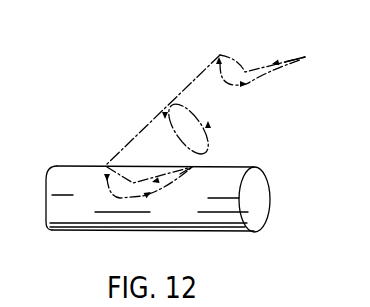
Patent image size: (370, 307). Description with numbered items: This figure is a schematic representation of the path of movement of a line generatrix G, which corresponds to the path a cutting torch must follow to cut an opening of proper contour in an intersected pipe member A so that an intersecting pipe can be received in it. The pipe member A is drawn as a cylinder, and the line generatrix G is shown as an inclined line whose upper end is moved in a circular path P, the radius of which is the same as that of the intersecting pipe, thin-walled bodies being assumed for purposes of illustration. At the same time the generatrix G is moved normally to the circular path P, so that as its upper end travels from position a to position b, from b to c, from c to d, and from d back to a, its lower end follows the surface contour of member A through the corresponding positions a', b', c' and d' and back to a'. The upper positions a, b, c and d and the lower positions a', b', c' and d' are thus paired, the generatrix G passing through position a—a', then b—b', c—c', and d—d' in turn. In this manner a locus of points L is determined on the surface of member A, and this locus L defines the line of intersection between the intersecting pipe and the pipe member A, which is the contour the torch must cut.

The pipe member A is at (55, 207).
The locus of points L is at (143, 194).
The line generatrix G is at (133, 138).
The circular path P is at (212, 143).
The position a is at (188, 42).
The position b is at (260, 92).
The position c is at (313, 68).
The position d is at (262, 44).
The position a' is at (80, 153).
The position b' is at (129, 194).
The position c' is at (201, 180).
The position d' is at (149, 161).